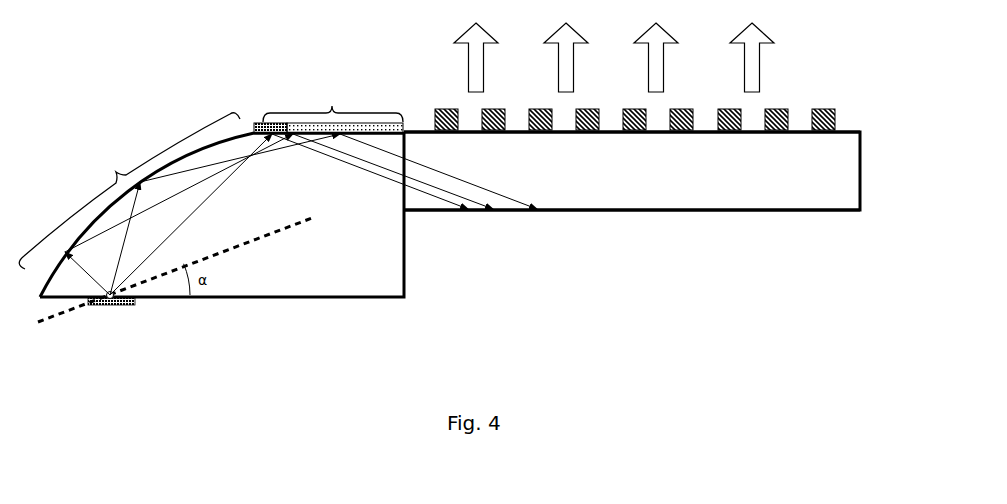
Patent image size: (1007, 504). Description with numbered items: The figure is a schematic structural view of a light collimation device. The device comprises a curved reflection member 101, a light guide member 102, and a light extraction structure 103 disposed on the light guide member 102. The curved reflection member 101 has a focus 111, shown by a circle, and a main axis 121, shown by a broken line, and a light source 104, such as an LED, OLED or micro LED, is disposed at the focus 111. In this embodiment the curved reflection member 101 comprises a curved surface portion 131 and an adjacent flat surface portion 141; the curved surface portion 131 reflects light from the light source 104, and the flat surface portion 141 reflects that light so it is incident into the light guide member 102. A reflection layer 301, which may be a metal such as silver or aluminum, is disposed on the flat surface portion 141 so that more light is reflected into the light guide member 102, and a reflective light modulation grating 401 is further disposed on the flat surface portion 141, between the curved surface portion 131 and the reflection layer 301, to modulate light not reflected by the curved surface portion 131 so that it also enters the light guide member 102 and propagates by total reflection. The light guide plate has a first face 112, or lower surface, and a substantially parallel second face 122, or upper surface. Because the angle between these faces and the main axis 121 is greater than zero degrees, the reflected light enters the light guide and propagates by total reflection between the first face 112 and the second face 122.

The curved reflection member 101 is at (163, 153).
The curved surface portion 131 is at (129, 191).
The reflective light modulation grating 401 is at (278, 131).
The reflection layer 301 is at (355, 120).
The flat surface portion 141 is at (333, 106).
The light extraction structure 103 is at (826, 108).
The second face 122 is at (850, 130).
The light guide member 102 is at (862, 176).
The first face 112 is at (843, 212).
The main axis 121 is at (52, 320).
The focus 111 is at (110, 305).
The light source 104 is at (133, 305).